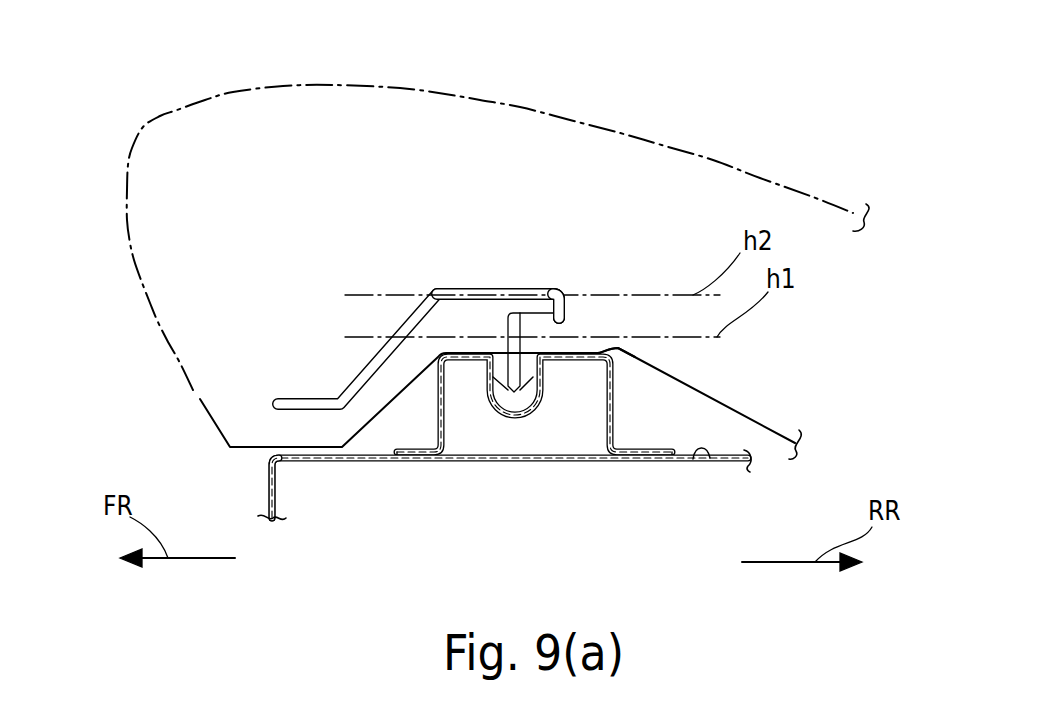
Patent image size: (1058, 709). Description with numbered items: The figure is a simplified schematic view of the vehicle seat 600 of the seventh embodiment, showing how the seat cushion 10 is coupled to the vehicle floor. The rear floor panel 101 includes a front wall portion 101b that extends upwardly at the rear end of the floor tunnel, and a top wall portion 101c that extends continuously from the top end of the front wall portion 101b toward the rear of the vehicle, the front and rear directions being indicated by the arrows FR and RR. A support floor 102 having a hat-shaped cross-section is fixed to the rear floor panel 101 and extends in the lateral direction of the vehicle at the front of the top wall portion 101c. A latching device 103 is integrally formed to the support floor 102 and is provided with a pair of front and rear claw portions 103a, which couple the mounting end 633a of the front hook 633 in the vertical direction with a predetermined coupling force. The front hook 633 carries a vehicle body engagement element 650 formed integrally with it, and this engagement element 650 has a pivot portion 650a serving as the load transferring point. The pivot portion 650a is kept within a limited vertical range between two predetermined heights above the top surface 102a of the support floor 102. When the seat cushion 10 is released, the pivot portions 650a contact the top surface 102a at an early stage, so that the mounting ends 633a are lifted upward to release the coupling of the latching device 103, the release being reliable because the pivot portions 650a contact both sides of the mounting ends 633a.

The seat cushion 10 is at (518, 106).
The vehicle seat 600 is at (697, 143).
The vehicle body engagement element 650 is at (529, 288).
The pivot portion 650a is at (575, 322).
The front hook 633 is at (369, 360).
The mounting end 633a is at (511, 398).
The support floor 102 is at (437, 418).
The top surface 102a is at (610, 348).
The latching device 103 is at (537, 420).
The claw portion 103a is at (542, 392).
The rear floor panel 101 is at (727, 457).
The front wall portion 101b is at (270, 490).
The top wall portion 101c is at (710, 458).